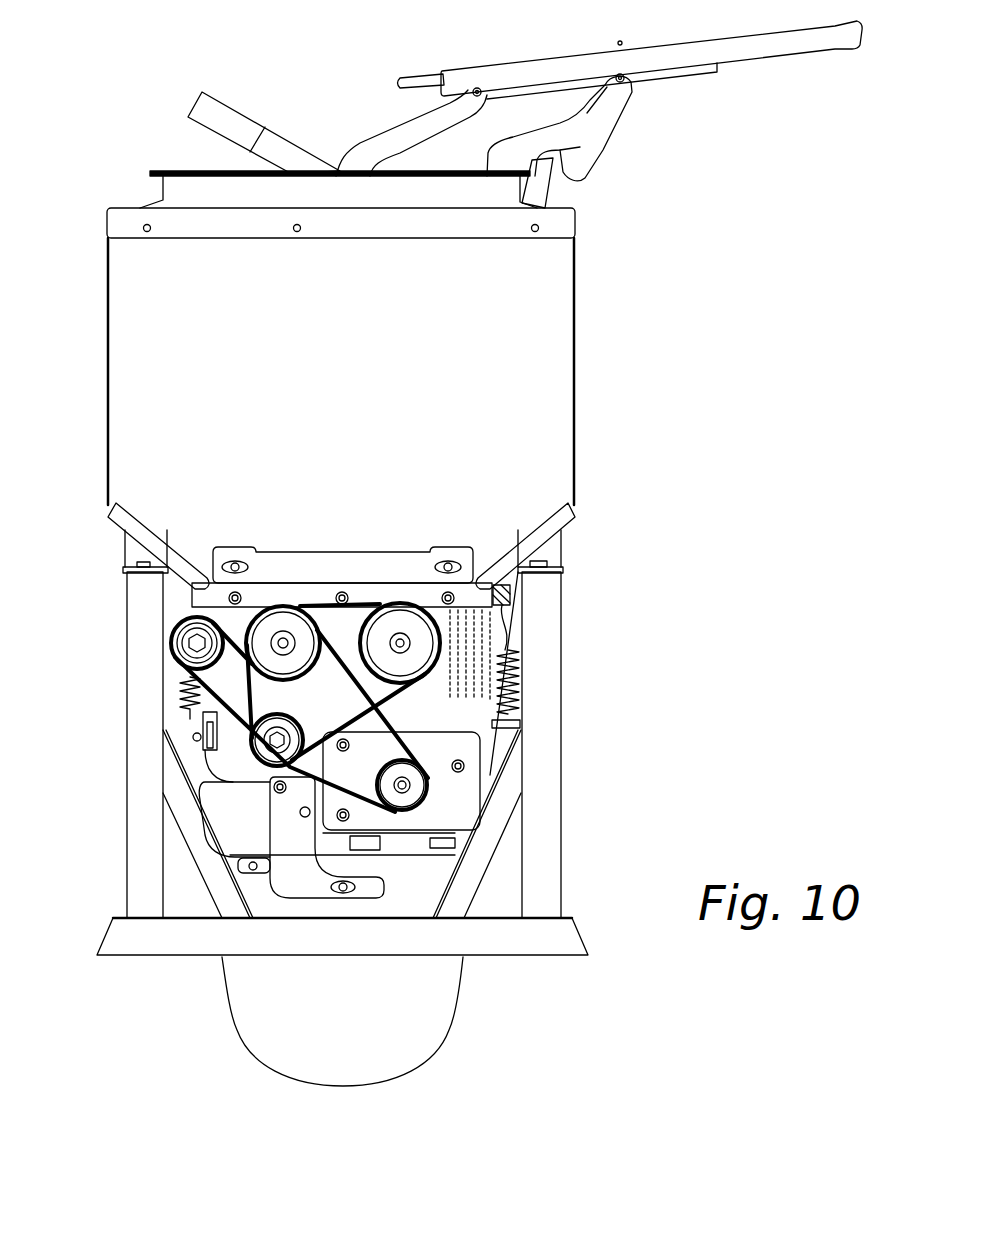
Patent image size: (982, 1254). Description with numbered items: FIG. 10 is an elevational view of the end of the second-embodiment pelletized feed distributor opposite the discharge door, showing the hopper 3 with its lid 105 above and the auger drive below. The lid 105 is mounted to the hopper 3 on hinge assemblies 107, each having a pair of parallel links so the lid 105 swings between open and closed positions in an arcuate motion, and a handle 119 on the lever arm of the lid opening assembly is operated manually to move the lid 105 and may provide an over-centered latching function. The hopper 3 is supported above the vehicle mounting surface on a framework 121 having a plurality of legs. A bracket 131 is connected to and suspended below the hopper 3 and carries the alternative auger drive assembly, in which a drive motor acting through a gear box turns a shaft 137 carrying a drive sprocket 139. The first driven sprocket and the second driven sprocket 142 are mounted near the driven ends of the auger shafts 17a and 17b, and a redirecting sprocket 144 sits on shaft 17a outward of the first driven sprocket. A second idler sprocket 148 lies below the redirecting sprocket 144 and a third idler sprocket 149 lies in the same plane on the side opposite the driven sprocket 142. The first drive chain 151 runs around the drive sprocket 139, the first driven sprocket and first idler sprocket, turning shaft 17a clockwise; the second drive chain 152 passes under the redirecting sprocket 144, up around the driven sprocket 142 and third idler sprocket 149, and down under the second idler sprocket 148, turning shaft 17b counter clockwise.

The hopper 3 is at (577, 405).
The lid 105 is at (786, 50).
The hinge assembly 107 is at (650, 152).
The handle 119 is at (225, 100).
The shaft 17a is at (283, 641).
The shaft 17b is at (405, 643).
The framework 121 is at (555, 767).
The bracket 131 is at (453, 673).
The shaft 137 is at (400, 790).
The drive sprocket 139 is at (420, 790).
The second driven sprocket 142 is at (400, 643).
The redirecting sprocket 144 is at (292, 632).
The second idler sprocket 148 is at (297, 724).
The third idler sprocket 149 is at (178, 638).
The first drive chain 151 is at (385, 706).
The second drive chain 152 is at (210, 700).